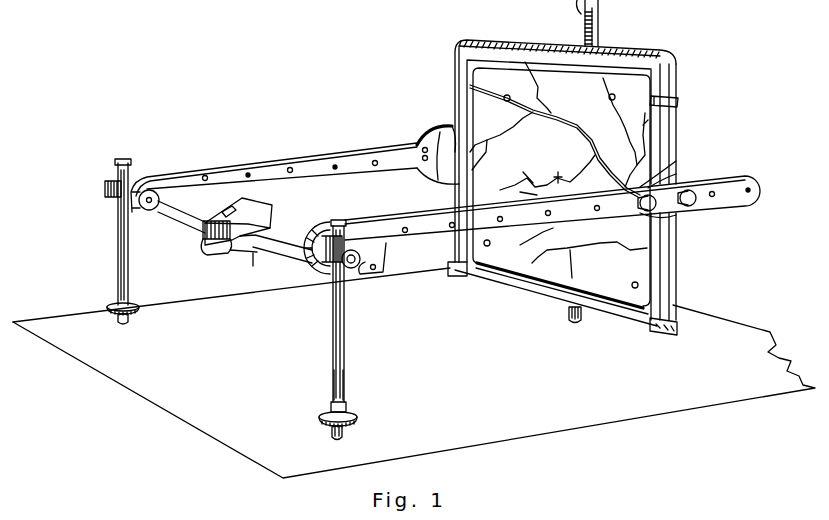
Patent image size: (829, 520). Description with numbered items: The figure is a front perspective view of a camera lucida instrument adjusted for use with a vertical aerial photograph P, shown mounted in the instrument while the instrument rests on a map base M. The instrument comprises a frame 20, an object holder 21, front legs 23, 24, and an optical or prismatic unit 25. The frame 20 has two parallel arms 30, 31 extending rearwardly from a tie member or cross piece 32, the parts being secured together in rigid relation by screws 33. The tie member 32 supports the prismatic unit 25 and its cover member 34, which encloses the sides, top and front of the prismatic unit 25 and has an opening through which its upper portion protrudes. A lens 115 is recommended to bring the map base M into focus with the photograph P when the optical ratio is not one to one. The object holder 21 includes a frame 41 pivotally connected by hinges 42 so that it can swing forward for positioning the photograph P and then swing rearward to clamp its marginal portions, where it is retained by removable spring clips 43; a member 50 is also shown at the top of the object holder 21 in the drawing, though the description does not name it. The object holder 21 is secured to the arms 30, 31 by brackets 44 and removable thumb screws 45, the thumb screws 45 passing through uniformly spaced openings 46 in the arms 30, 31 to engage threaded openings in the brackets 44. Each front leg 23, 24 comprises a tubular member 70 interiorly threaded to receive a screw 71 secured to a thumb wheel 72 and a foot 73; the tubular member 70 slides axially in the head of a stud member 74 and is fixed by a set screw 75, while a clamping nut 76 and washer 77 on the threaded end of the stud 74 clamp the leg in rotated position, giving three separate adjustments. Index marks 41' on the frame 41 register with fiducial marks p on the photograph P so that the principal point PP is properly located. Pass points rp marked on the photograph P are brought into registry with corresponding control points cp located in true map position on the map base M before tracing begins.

The frame 20 is at (186, 198).
The object holder 21 is at (479, 36).
The front leg 23 is at (118, 266).
The front leg 24 is at (346, 339).
The prismatic unit 25 is at (200, 218).
The arm 30 is at (379, 143).
The arm 31 is at (415, 214).
The tie member 32 is at (292, 238).
The screws 33 is at (376, 267).
The cover member 34 is at (262, 204).
The frame 41 is at (684, 192).
The index marks 41' is at (532, 203).
The hinges 42 is at (666, 332).
The spring clips 43 is at (678, 103).
The brackets 44 is at (440, 137).
The thumb screws 45 is at (658, 212).
The openings 46 is at (333, 167).
The support rod 50 is at (600, 36).
The tubular member 70 is at (346, 371).
The screw 71 is at (348, 410).
The thumb wheel 72 is at (320, 418).
The foot 73 is at (344, 430).
The stud member 74 is at (330, 272).
The set screw 75 is at (360, 272).
The clamping nut 76 is at (151, 193).
The washer 77 is at (128, 178).
The lens 115 is at (241, 254).
The photograph P is at (500, 68).
The fiducial marks p is at (540, 66).
The principal point PP is at (559, 177).
The reference image points rp is at (616, 94).
The control points cp is at (186, 372).
The map base M is at (443, 432).